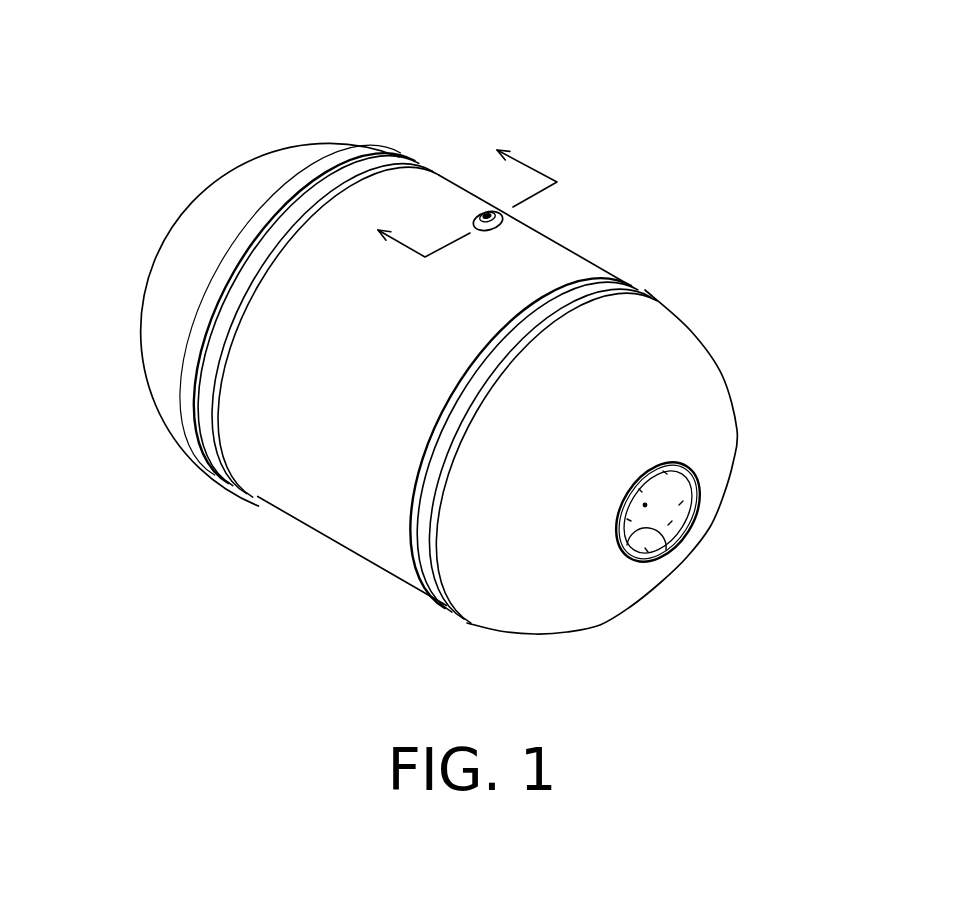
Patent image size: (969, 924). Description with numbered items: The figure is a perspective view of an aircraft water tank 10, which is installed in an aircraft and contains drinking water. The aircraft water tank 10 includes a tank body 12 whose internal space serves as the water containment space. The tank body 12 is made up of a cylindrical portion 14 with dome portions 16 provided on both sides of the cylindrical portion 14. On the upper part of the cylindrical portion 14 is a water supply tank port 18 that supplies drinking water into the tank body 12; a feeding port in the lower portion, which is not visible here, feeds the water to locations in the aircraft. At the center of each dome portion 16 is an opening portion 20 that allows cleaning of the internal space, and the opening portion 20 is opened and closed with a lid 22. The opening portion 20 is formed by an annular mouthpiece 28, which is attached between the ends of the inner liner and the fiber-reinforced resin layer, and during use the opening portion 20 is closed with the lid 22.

The aircraft water tank 10 is at (451, 36).
The tank body 12 is at (557, 230).
The cylindrical portion 14 is at (558, 258).
The dome portion 16 is at (237, 193).
The water supply tank port 18 is at (490, 212).
The opening portion 20 is at (667, 548).
The lid 22 is at (687, 538).
The annular mouthpiece 28 is at (697, 477).